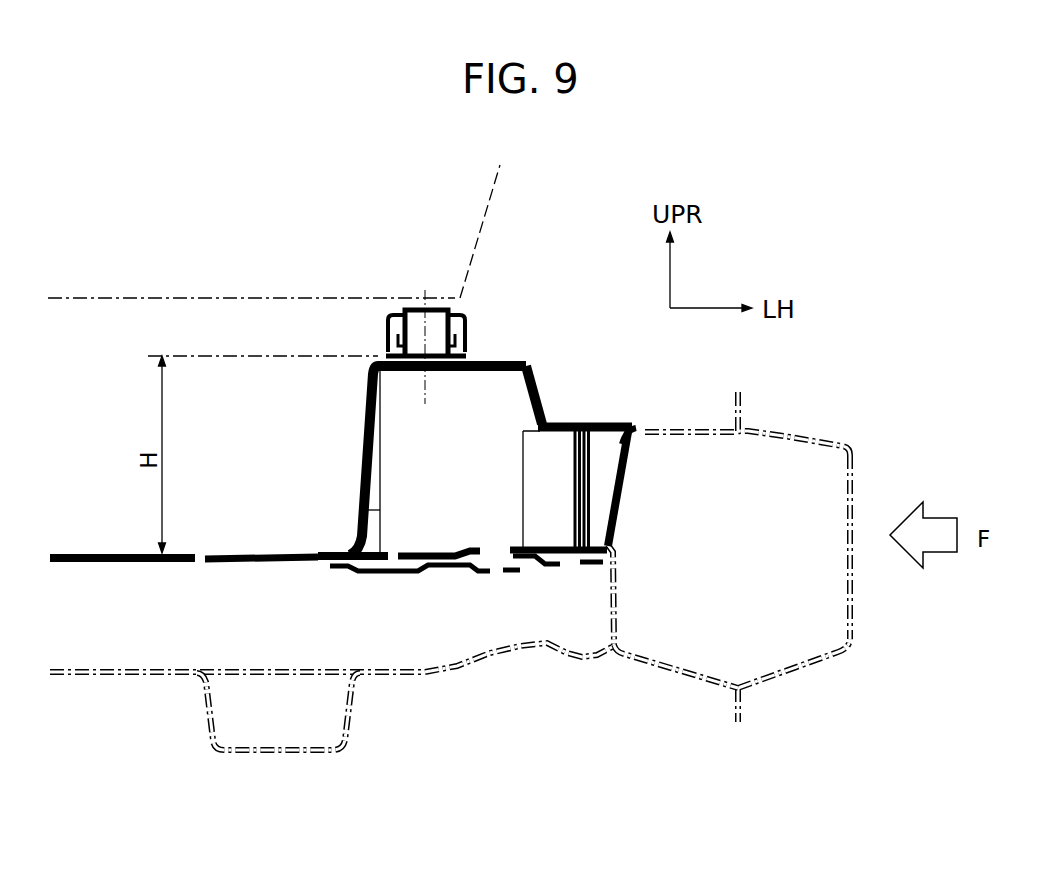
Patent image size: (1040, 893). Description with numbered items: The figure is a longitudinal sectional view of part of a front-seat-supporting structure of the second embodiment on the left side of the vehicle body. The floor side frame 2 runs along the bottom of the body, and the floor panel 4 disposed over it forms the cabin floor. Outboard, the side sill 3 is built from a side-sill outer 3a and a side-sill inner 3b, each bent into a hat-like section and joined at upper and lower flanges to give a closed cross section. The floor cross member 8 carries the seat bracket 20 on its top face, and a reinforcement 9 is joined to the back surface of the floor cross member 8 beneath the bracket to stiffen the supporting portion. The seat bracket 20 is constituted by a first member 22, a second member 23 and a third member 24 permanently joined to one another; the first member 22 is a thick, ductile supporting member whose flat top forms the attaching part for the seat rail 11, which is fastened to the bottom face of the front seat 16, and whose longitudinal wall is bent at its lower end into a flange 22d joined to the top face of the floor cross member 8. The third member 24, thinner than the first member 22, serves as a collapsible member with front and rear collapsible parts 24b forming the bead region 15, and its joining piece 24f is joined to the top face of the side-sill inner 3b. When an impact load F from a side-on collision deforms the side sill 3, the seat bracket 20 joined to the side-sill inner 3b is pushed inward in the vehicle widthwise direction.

The floor side frame 2 is at (249, 754).
The side sill 3 is at (777, 572).
The side-sill outer 3a is at (858, 625).
The side-sill inner 3b is at (679, 667).
The floor panel 4 is at (98, 676).
The floor cross member 8 is at (118, 553).
The reinforcement 9 is at (386, 576).
The seat rail 11 is at (468, 323).
The bead region 15 is at (591, 480).
The front seat 16 is at (498, 192).
The seat bracket 20 is at (322, 412).
The first member 22 is at (395, 423).
The flange 22d is at (330, 547).
The second member 23 is at (366, 524).
The third member 24 is at (618, 459).
The front and rear collapsible parts 24b is at (609, 500).
The joining piece 24f is at (627, 432).